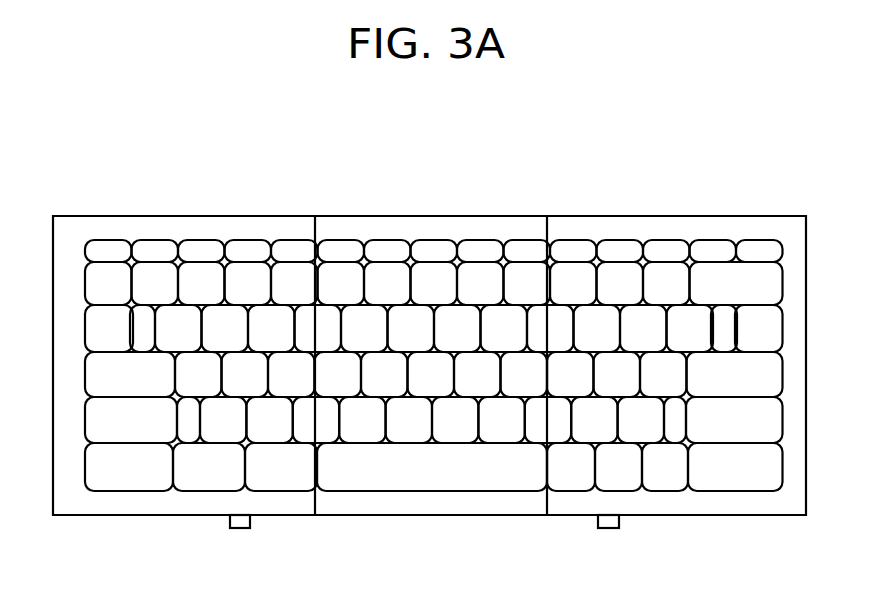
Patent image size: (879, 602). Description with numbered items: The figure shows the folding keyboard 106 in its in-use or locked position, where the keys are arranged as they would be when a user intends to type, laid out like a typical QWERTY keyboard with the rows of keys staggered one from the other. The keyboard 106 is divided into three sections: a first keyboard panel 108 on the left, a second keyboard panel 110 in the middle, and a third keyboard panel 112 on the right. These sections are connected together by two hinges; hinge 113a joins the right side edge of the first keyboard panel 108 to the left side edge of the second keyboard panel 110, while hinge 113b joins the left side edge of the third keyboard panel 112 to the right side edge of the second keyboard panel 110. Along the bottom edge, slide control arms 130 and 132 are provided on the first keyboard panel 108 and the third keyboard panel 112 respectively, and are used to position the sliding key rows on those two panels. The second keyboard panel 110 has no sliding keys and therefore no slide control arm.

The folding keyboard 106 is at (455, 110).
The Keyboard Panel 1 108 is at (207, 216).
The Keyboard Panel 2 110 is at (400, 216).
The Keyboard Panel 3 112 is at (675, 216).
The hinge 113a is at (315, 515).
The hinge 113b is at (547, 515).
The slide control arm 130 is at (240, 530).
The slide control arm 132 is at (609, 530).